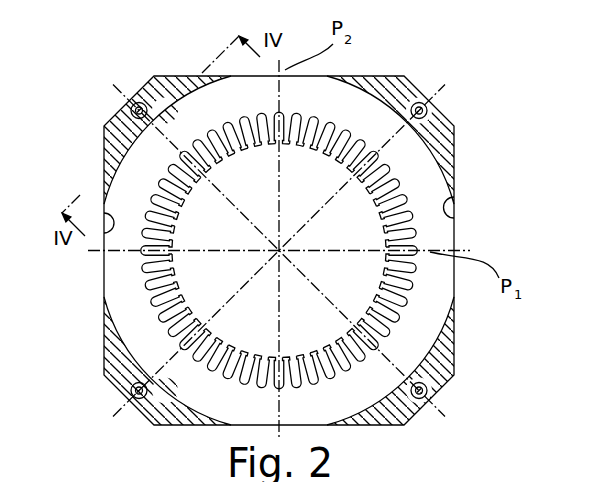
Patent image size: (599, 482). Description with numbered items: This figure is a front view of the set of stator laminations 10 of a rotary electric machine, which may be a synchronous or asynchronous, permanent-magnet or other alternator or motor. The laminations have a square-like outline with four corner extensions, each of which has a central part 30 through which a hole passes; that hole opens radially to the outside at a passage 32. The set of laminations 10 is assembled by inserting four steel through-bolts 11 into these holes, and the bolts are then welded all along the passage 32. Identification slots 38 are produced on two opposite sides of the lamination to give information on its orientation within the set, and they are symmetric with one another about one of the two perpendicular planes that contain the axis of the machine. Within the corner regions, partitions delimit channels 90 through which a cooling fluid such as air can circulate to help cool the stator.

The set of stator laminations 10 is at (458, 57).
The steel through-bolt 11 is at (127, 387).
The central part 30 is at (131, 108).
The passage 32 is at (129, 101).
The identification slot 38 is at (104, 228).
The channel 90 is at (182, 84).